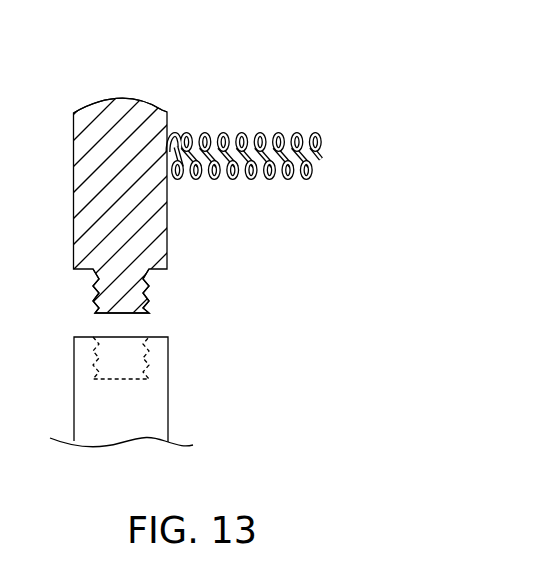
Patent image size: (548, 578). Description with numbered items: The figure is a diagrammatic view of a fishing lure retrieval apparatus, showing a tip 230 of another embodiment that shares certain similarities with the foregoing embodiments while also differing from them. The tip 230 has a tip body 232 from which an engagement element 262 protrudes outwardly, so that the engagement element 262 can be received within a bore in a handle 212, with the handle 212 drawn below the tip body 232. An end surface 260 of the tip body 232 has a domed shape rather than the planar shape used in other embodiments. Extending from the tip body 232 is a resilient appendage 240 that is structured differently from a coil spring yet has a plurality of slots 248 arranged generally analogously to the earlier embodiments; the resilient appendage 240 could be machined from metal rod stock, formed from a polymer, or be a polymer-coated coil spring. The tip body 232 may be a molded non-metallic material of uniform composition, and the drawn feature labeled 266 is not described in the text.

The handle 212 is at (168, 400).
The tip 230 is at (236, 225).
The tip body 232 is at (74, 185).
The resilient appendage 240 is at (322, 143).
The slots 248 is at (300, 133).
The end surface 260 is at (150, 100).
The engagement element 262 is at (149, 287).
The threaded bore 266 is at (101, 351).